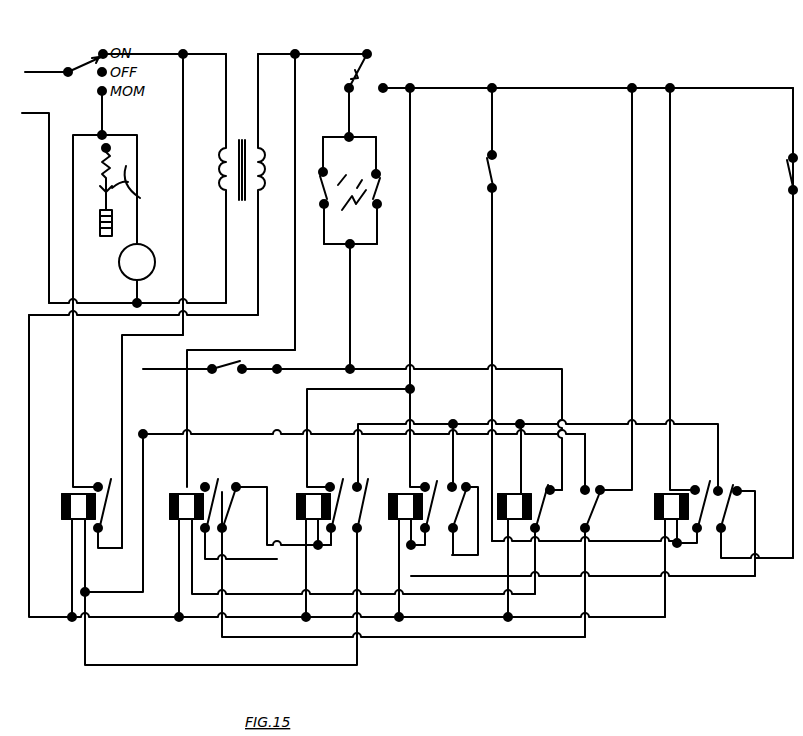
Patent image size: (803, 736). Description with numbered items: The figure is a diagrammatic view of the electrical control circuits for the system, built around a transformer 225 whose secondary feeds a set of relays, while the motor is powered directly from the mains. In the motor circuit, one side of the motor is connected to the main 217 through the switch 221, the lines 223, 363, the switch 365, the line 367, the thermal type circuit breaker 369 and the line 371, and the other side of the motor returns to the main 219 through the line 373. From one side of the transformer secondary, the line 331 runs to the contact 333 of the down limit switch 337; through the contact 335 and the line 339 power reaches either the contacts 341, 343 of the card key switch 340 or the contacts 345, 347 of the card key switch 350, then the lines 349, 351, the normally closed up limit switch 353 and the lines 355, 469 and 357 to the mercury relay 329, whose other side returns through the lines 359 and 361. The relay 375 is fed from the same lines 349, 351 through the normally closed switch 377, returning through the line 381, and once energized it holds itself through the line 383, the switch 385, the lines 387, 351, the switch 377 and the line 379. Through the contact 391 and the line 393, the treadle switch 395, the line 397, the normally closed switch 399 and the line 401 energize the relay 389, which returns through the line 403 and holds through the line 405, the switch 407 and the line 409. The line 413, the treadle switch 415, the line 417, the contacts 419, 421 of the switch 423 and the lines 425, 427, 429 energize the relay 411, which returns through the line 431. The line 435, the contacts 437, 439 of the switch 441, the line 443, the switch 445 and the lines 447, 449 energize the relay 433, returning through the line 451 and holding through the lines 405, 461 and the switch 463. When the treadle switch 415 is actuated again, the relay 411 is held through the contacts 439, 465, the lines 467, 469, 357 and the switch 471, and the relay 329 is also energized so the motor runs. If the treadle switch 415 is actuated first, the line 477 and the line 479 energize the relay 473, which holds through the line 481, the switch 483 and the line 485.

The main 217 is at (47, 67).
The switch 221 is at (78, 58).
The main 219 is at (44, 112).
The line 223 is at (170, 53).
The line 363 is at (180, 115).
The thermal type circuit breaker 369 is at (140, 180).
The line 371 is at (139, 228).
The line 373 is at (133, 301).
The transformer 225 is at (224, 165).
The line 331 is at (278, 50).
The contact 333 is at (374, 50).
The down limit switch 337 is at (350, 69).
The contact 335 is at (346, 90).
The line 339 is at (351, 112).
The contact 391 is at (384, 84).
The card key switch 340 is at (349, 148).
The contact 341 is at (318, 160).
The contact 345 is at (380, 160).
The card key switch 350 is at (349, 206).
The contact 343 is at (320, 225).
The contact 347 is at (380, 225).
The line 349 is at (352, 316).
The line 351 is at (368, 366).
The line 405 is at (412, 224).
The line 413 is at (490, 110).
The treadle switch 415 is at (487, 166).
The line 417 is at (494, 214).
The line 393 is at (578, 87).
The line 435 is at (630, 180).
The line 481 is at (672, 180).
The treadle switch 395 is at (786, 165).
The line 397 is at (791, 290).
The line 383 is at (292, 326).
The line 355 is at (130, 368).
The line 359 is at (31, 372).
The line 367 is at (75, 386).
The up limit switch 353 is at (228, 372).
The line 467 is at (210, 432).
The line 461 is at (396, 392).
The line 427 is at (452, 422).
The line 425 is at (456, 444).
The line 429 is at (523, 452).
The relay 411 is at (522, 492).
The switch 377 is at (542, 512).
The contact 465 is at (586, 480).
The contact 437 is at (598, 488).
The switch 441 is at (596, 500).
The contact 439 is at (590, 528).
The relay 473 is at (658, 494).
The switch 483 is at (708, 484).
The line 479 is at (690, 544).
The switch 399 is at (730, 514).
The line 485 is at (704, 546).
The line 477 is at (622, 543).
The line 401 is at (696, 578).
The line 431 is at (500, 578).
The contact 419 is at (450, 540).
The contact 421 is at (458, 486).
The switch 423 is at (428, 536).
The switch 407 is at (432, 486).
The relay 389 is at (389, 502).
The line 409 is at (408, 540).
The line 403 is at (397, 584).
The switch 471 is at (366, 486).
The line 357 is at (87, 570).
The line 469 is at (116, 594).
The line 361 is at (70, 556).
The mercury relay 329 is at (60, 498).
The switch 365 is at (112, 488).
The relay 375 is at (170, 498).
The line 381 is at (177, 556).
The switch 385 is at (220, 488).
The line 387 is at (264, 564).
The switch 445 is at (226, 502).
The line 447 is at (246, 480).
The line 443 is at (586, 594).
The line 379 is at (494, 594).
The line 451 is at (308, 578).
The line 449 is at (316, 530).
The relay 433 is at (314, 492).
The switch 463 is at (346, 482).